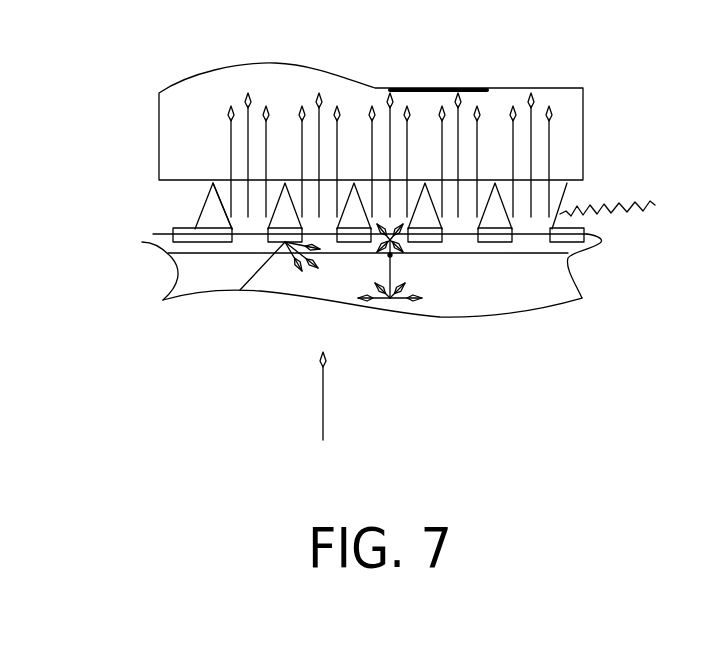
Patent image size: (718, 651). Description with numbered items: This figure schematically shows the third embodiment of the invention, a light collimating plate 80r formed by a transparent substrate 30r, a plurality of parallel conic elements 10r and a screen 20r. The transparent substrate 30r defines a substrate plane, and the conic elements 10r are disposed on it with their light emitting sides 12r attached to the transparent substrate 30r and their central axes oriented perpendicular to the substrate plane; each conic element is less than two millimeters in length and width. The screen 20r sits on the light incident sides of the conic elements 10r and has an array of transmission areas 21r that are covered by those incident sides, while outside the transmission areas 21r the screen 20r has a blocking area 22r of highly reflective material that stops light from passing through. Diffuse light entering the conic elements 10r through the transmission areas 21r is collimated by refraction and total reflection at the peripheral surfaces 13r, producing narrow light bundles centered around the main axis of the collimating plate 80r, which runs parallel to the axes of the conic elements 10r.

The conic elements 10r is at (556, 197).
The light emitting sides 12r is at (220, 183).
The peripheral surfaces 13r is at (228, 210).
The screen 20r is at (612, 232).
The transmission areas 21r is at (247, 245).
The blocking area 22r is at (190, 229).
The transparent substrate 30r is at (570, 107).
The light collimating plate 80r is at (323, 414).